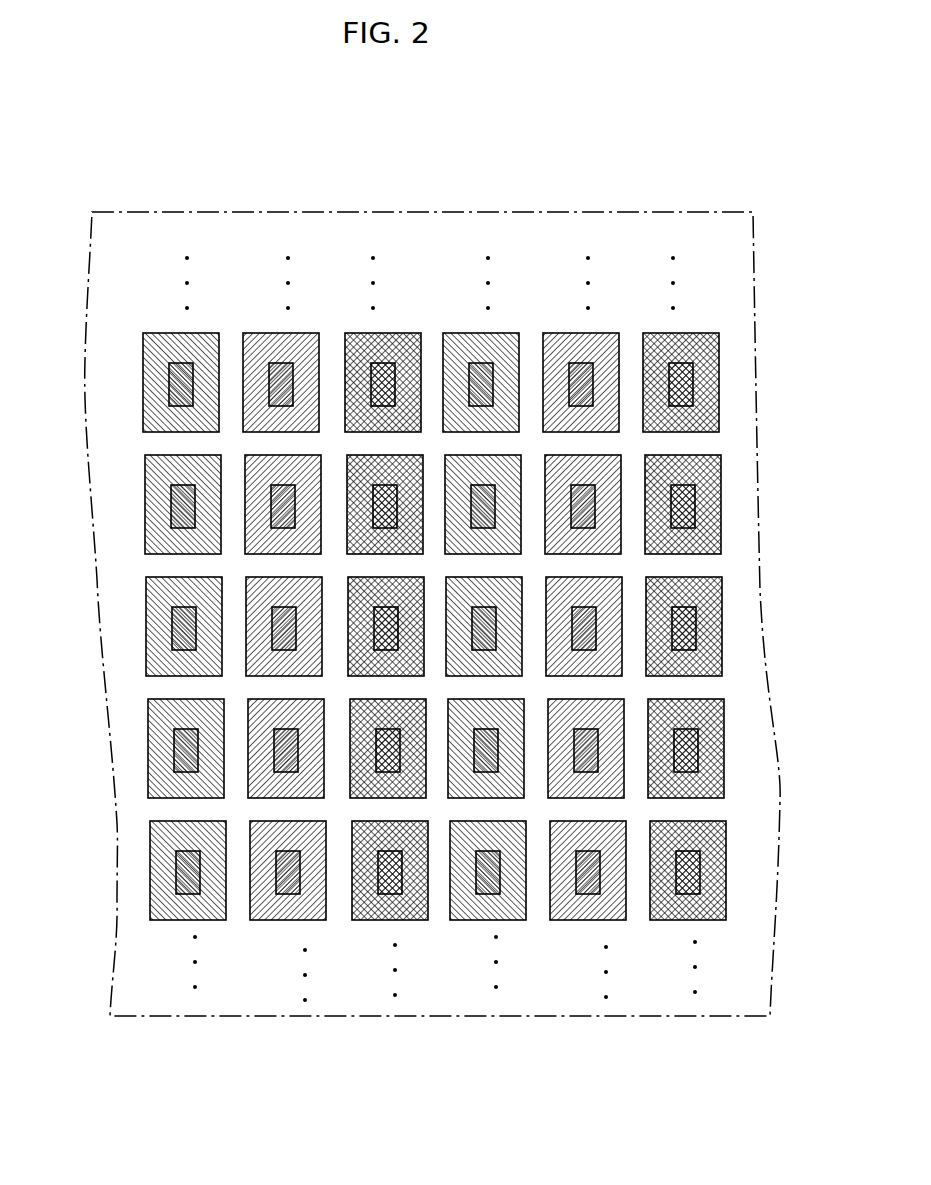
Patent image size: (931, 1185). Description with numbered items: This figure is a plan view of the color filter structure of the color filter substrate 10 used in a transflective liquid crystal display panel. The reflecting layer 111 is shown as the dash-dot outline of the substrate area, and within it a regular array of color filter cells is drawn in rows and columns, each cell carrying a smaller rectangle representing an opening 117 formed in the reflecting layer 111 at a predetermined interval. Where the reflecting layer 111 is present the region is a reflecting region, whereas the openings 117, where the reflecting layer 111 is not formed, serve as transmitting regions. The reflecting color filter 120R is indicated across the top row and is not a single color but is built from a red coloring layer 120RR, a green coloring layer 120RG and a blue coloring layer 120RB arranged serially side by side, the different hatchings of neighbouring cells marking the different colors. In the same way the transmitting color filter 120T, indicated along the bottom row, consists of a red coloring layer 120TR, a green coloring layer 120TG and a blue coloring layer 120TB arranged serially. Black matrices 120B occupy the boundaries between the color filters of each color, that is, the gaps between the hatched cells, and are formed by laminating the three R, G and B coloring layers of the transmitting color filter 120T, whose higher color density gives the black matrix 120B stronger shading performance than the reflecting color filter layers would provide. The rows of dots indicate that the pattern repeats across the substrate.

The color filter substrate 10 is at (452, 166).
The reflecting layer 111 is at (97, 590).
The opening 117 is at (169, 387).
The reflecting color filter 120R is at (392, 158).
The blue coloring layer of reflecting color filter 120RB is at (120, 291).
The red coloring layer of reflecting color filter 120RR is at (244, 333).
The green coloring layer of reflecting color filter 120RG is at (345, 333).
The black matrix 120B is at (160, 807).
The transmitting color filter 120T is at (400, 1072).
The blue coloring layer of transmitting color filter 120TB is at (176, 894).
The red coloring layer of transmitting color filter 120TR is at (280, 894).
The green coloring layer of transmitting color filter 120TG is at (376, 894).